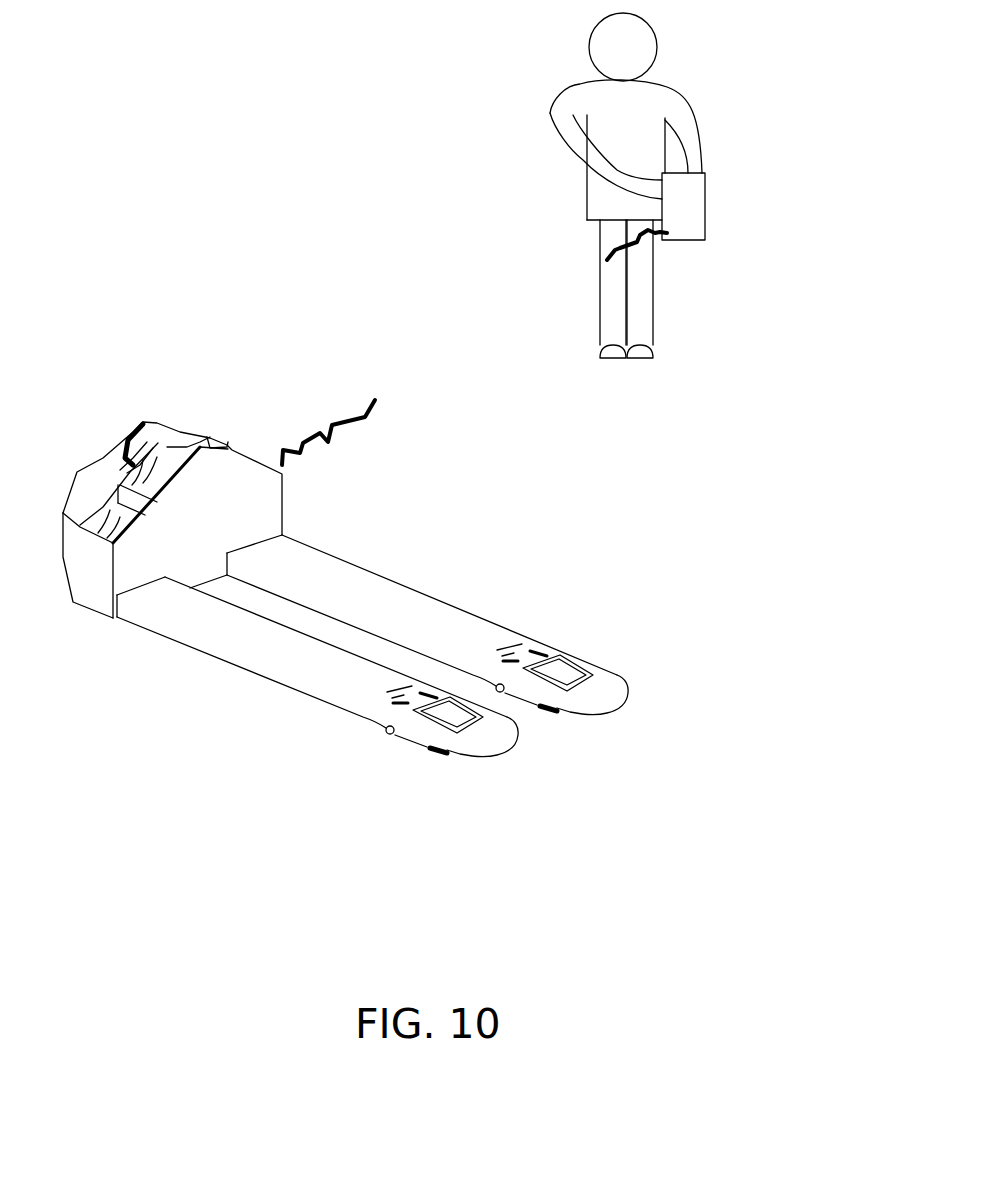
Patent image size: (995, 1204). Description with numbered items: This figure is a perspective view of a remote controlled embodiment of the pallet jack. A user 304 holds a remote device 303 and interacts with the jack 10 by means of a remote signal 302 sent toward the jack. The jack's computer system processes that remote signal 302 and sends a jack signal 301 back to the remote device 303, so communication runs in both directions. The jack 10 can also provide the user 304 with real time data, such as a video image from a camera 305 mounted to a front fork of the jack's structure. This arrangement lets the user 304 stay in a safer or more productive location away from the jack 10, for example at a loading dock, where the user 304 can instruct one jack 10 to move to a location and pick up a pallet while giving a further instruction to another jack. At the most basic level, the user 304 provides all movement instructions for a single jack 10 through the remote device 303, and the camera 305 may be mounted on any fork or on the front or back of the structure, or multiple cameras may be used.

The jack 10 is at (384, 634).
The jack signal 301 is at (330, 420).
The remote signal 302 is at (613, 250).
The remote device 303 is at (697, 215).
The user 304 is at (580, 95).
The camera 305 is at (513, 747).